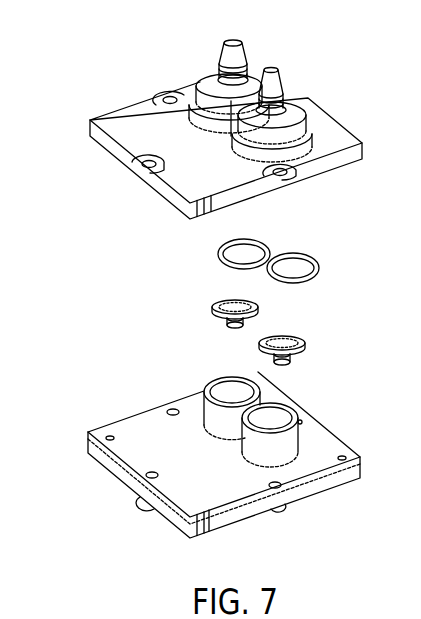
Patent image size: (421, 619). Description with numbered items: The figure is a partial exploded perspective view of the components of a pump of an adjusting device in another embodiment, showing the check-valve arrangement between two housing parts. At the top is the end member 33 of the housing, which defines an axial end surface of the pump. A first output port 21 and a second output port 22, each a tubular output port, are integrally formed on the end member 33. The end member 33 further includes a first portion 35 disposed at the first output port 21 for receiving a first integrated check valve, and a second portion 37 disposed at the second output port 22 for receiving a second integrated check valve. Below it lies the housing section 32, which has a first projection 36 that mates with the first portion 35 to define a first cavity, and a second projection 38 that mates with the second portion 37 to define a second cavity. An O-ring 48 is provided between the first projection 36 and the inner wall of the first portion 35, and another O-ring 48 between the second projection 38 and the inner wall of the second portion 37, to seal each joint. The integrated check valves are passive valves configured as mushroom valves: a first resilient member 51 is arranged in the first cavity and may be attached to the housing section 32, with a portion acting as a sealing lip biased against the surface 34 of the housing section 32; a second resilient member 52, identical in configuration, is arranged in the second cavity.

The first output port 21 is at (280, 84).
The second output port 22 is at (220, 59).
The housing section 32 is at (90, 455).
The end member 33 is at (90, 141).
The surface 34 is at (290, 478).
The first portion 35 is at (308, 120).
The first projection 36 is at (298, 428).
The second portion 37 is at (197, 92).
The second projection 38 is at (207, 393).
The O-ring 48 is at (223, 248).
The first resilient member 51 is at (303, 345).
The second resilient member 52 is at (213, 304).